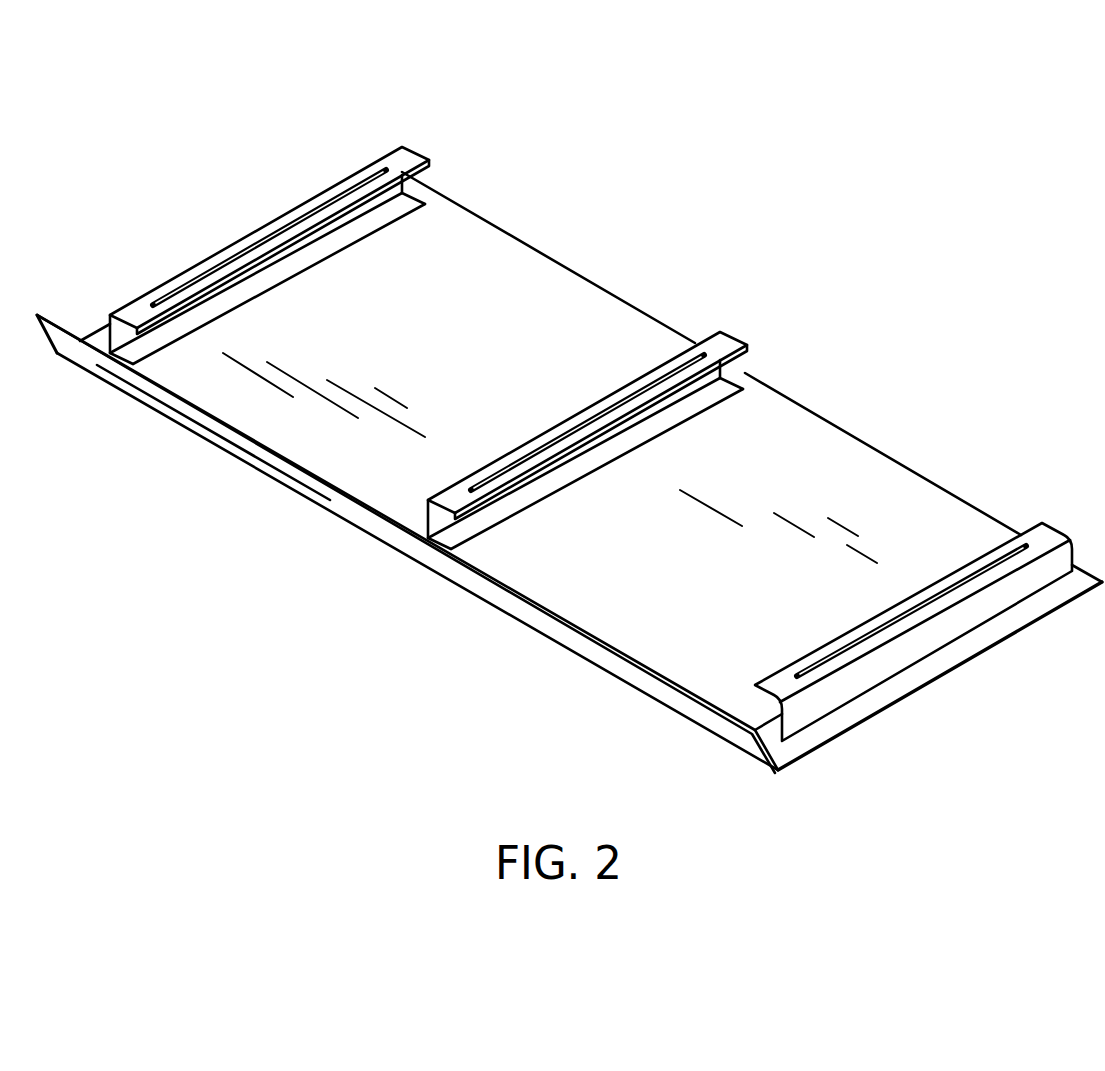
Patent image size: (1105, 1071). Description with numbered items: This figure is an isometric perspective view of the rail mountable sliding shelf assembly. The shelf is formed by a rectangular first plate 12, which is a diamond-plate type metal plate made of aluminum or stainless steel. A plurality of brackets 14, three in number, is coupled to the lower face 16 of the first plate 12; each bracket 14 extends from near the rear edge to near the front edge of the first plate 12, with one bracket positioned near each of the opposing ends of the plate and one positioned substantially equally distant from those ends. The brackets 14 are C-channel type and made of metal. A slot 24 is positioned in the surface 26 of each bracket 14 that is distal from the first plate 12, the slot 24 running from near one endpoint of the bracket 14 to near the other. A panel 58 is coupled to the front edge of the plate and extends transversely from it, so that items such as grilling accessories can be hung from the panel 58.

The first plate 12 is at (557, 297).
The brackets 14 is at (582, 391).
The lower face 16 is at (342, 346).
The slots 24 is at (630, 395).
The surface 26 is at (404, 153).
The panel 58 is at (362, 510).